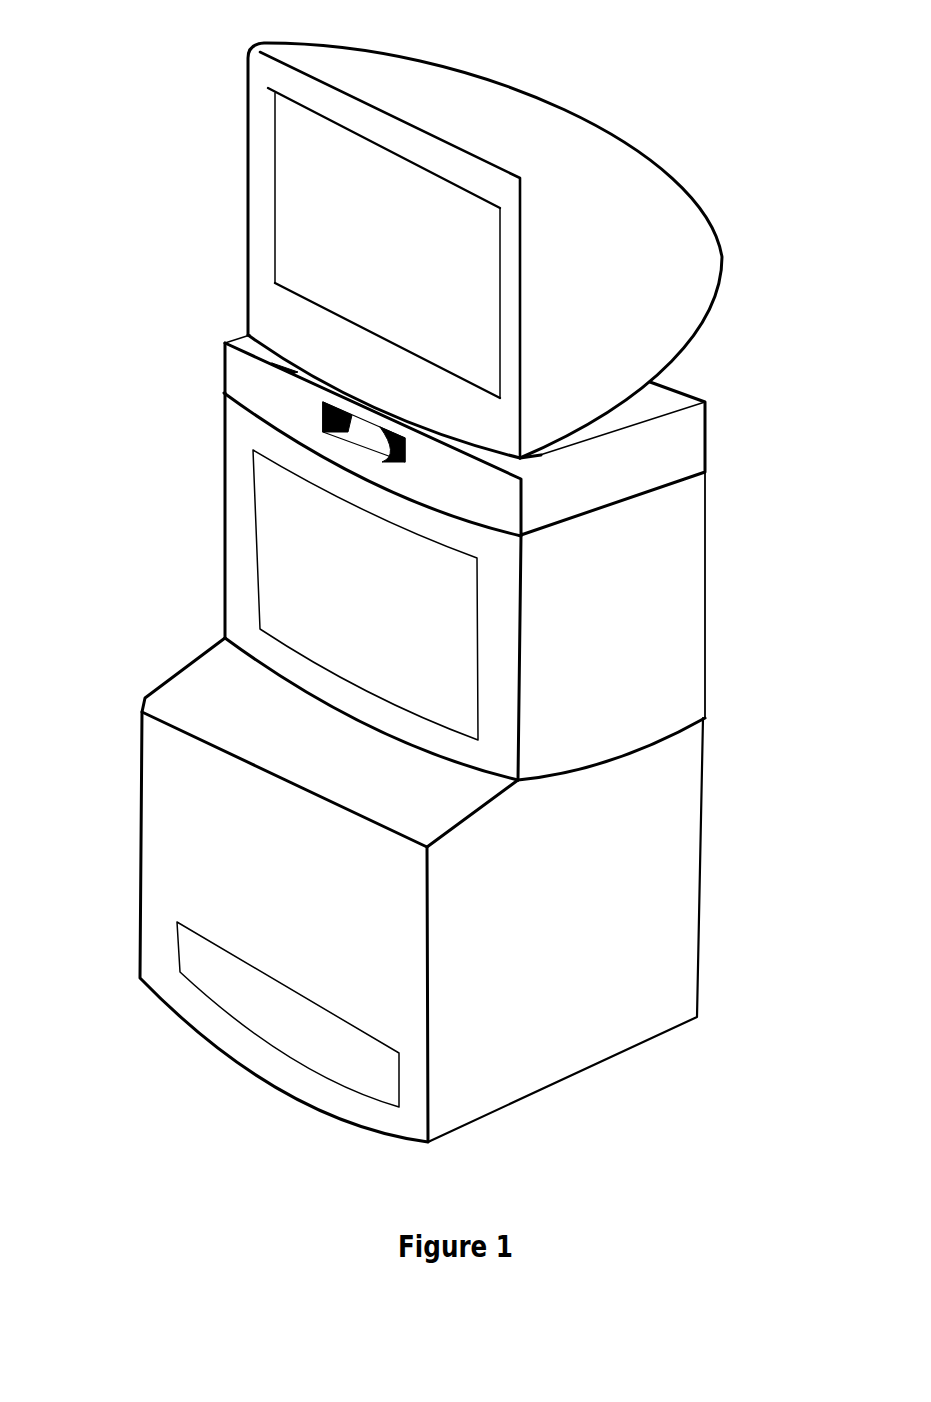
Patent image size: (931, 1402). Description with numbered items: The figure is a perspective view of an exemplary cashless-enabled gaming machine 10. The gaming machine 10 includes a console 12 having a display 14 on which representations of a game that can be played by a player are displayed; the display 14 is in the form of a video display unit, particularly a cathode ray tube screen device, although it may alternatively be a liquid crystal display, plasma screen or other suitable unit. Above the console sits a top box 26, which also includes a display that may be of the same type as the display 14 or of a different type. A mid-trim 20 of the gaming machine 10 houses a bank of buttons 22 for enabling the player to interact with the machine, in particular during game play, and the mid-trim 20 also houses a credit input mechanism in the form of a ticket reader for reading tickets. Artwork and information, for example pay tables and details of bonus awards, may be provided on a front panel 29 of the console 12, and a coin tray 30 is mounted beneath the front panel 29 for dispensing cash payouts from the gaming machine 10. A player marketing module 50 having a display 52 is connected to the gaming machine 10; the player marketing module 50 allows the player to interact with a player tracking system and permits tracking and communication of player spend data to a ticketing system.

The cashless-enabled gaming machine 10 is at (656, 82).
The console 12 is at (455, 586).
The display 14 is at (288, 520).
The mid-trim 20 is at (271, 742).
The bank of buttons 22 is at (243, 734).
The top box 26 is at (243, 159).
The front panel 29 is at (380, 927).
The coin tray 30 is at (281, 1006).
The player marketing module 50 is at (475, 420).
The display 52 is at (333, 418).